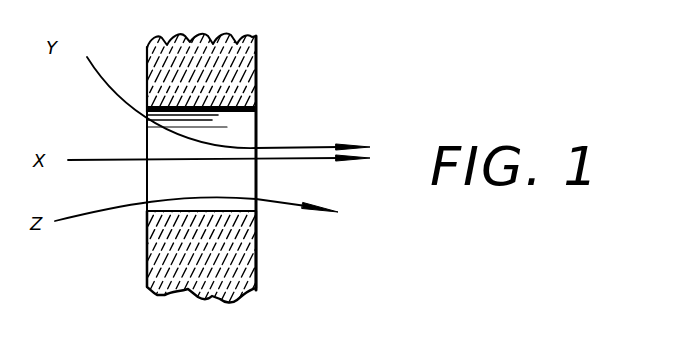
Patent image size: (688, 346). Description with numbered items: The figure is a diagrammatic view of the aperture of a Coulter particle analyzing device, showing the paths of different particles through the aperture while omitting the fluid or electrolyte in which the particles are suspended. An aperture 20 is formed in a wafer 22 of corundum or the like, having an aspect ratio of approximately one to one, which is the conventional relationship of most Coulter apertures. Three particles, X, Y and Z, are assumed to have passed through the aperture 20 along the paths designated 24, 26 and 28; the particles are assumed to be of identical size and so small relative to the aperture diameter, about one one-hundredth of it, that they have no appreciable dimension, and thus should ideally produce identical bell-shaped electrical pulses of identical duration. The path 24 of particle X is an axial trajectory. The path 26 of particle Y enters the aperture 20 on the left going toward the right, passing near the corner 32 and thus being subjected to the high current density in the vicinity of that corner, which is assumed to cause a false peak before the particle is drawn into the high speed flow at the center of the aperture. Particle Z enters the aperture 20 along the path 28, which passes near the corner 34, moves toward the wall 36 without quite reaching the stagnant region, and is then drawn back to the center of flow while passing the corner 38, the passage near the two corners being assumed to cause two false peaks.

The aperture 20 is at (238, 131).
The wafer 22 is at (243, 57).
The path of particle X 24 is at (100, 160).
The path of particle Y 26 is at (110, 88).
The path of particle Z 28 is at (100, 208).
The corner 32 is at (147, 74).
The corner 34 is at (147, 221).
The wall 36 is at (220, 211).
The corner 38 is at (248, 249).